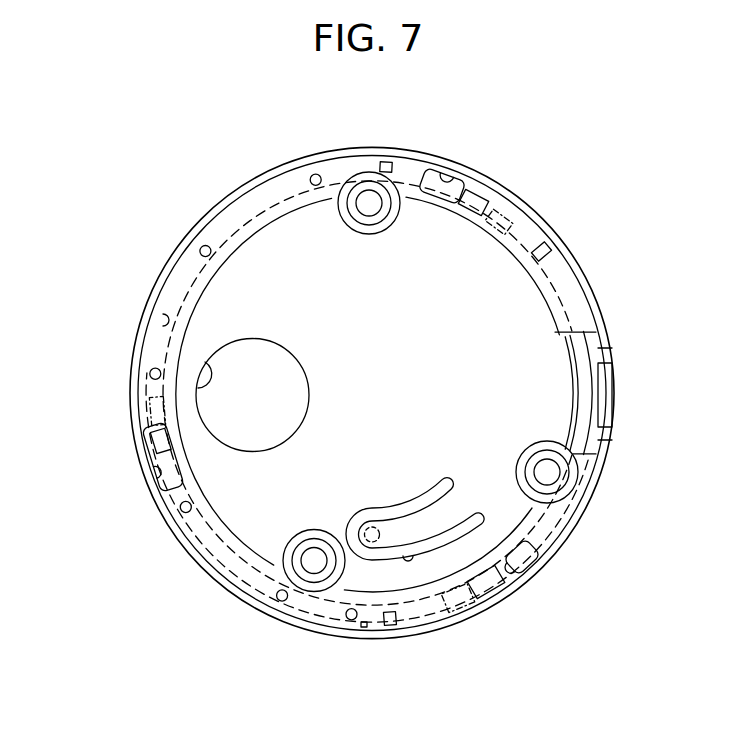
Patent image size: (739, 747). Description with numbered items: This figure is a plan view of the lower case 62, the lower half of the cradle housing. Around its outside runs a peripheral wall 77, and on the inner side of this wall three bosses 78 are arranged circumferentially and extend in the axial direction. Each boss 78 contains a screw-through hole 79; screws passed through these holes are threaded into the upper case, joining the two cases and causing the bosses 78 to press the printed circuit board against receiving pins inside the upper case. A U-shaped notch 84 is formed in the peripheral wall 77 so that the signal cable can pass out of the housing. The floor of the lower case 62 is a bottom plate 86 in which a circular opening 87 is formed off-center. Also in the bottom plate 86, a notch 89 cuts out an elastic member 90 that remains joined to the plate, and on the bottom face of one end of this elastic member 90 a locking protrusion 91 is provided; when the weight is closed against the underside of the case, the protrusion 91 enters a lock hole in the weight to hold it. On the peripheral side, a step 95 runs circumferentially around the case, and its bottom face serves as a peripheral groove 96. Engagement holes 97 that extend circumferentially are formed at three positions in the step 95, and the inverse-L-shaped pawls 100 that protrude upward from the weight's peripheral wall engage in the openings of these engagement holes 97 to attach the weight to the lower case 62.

The lower case 62 is at (614, 240).
The peripheral wall 77 is at (488, 604).
The boss 78 is at (377, 232).
The screw-through hole 79 is at (366, 206).
The U-shaped notch 84 is at (612, 388).
The bottom plate 86 is at (275, 303).
The circular opening 87 is at (210, 387).
The notch 89 is at (409, 558).
The elastic member 90 is at (397, 525).
The locking protrusion 91 is at (373, 542).
The step 95 is at (222, 548).
The peripheral groove 96 is at (163, 321).
The engagement hole 97 is at (445, 183).
The inverse-L-shaped pawl 100 is at (495, 205).